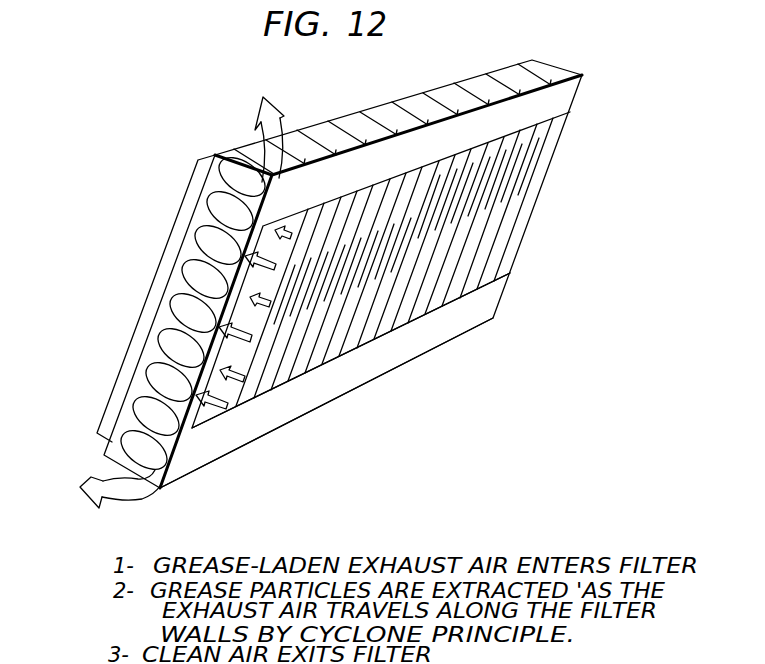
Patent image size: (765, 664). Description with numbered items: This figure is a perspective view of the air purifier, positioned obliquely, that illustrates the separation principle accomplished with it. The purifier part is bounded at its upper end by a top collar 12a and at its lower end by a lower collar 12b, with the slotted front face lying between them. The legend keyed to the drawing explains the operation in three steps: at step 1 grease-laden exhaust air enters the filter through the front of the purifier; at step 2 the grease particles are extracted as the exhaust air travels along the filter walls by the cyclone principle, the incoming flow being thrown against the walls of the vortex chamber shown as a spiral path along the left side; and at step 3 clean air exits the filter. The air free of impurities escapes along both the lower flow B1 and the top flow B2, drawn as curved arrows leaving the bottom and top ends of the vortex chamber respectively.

The top collar 12a is at (566, 102).
The lower collar 12b is at (488, 305).
The grease-laden exhaust air entering filter 1 is at (293, 228).
The grease particle extraction along filter walls 2 is at (143, 310).
The clean air exiting filter 3 is at (269, 128).
The lower flow B1 is at (142, 492).
The top flow B2 is at (257, 112).